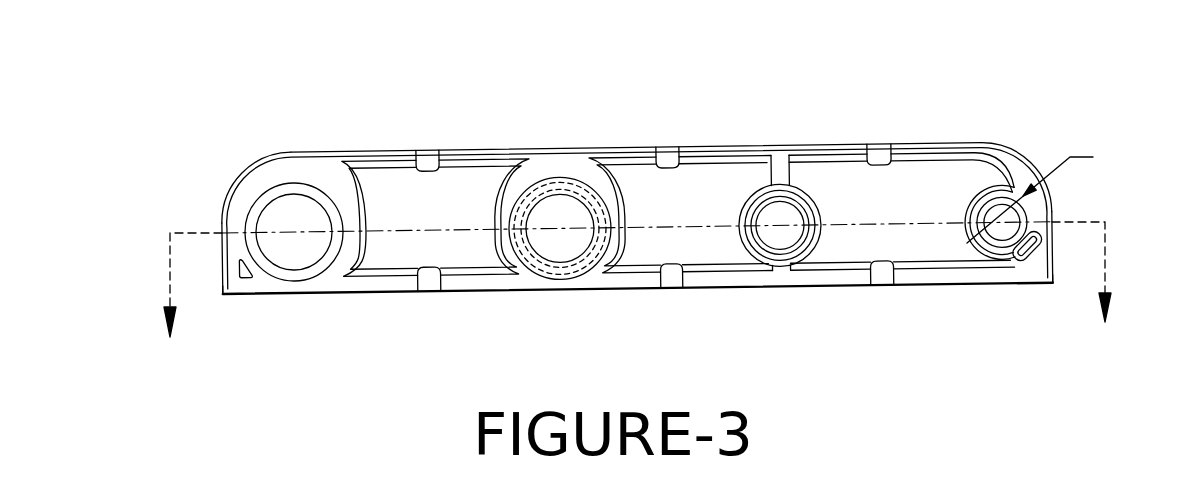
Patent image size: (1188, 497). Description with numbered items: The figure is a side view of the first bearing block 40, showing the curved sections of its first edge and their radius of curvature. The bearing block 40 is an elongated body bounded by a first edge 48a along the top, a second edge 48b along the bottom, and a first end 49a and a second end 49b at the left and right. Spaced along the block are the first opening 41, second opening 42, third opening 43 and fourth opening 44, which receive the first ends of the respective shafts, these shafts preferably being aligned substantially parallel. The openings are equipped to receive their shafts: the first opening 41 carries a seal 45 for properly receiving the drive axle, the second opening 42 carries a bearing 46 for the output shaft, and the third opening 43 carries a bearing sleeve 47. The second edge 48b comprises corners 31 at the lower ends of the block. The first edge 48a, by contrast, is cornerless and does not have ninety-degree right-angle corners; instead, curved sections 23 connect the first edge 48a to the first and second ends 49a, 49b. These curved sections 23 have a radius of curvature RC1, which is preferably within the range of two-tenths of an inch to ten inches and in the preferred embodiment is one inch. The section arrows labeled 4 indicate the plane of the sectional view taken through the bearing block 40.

The first bearing block 40 is at (478, 113).
The curved section 23 is at (246, 170).
The first edge 48a is at (602, 150).
The second edge 48b is at (645, 289).
The first end 49a is at (220, 223).
The second end 49b is at (1053, 219).
The corner 31 is at (221, 294).
The seal 45 is at (292, 273).
The first opening 41 is at (322, 245).
The second opening 42 is at (543, 245).
The bearing 46 is at (577, 268).
The third opening 43 is at (770, 238).
The bearing sleeve 47 is at (803, 247).
The fourth opening 44 is at (1000, 236).
The radius of curvature RC1 is at (1052, 196).
The section line 4- 4 is at (639, 300).